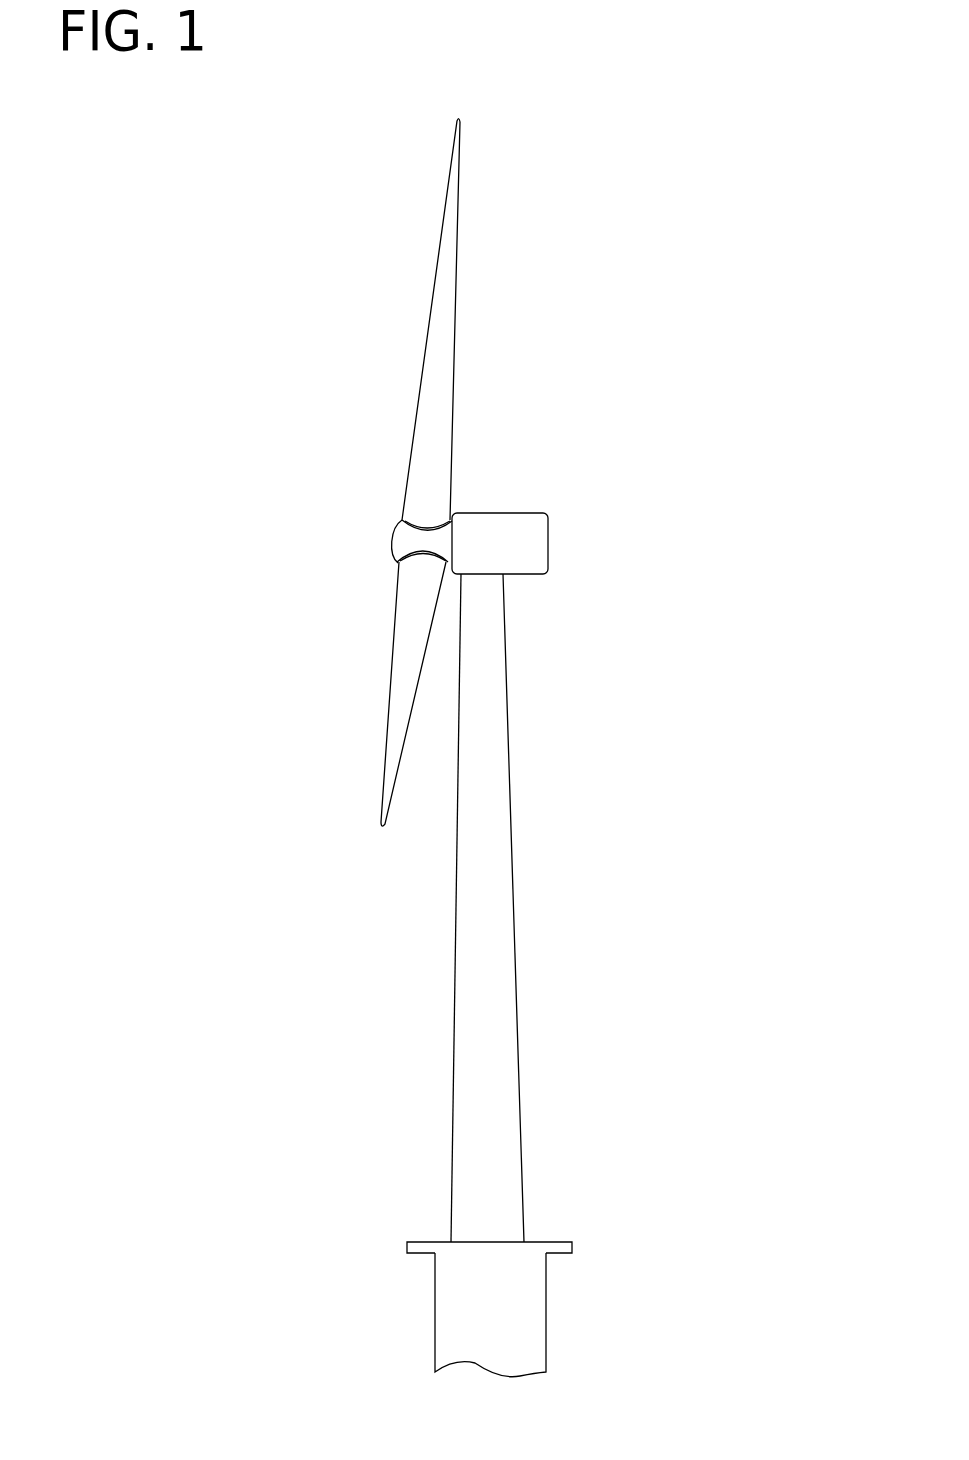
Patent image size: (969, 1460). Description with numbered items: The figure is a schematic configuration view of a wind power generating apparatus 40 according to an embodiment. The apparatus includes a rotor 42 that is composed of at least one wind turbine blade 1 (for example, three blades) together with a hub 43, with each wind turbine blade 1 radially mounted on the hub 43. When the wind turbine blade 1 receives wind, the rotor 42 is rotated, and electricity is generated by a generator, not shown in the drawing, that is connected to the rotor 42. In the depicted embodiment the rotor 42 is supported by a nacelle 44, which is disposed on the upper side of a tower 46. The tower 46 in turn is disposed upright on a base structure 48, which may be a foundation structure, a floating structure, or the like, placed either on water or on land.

The wind turbine blade 1 is at (438, 260).
The wind power generating apparatus 40 is at (682, 259).
The rotor 42 is at (339, 505).
The hub 43 is at (393, 541).
The nacelle 44 is at (549, 540).
The tower 46 is at (513, 910).
The base structure 48 is at (546, 1316).